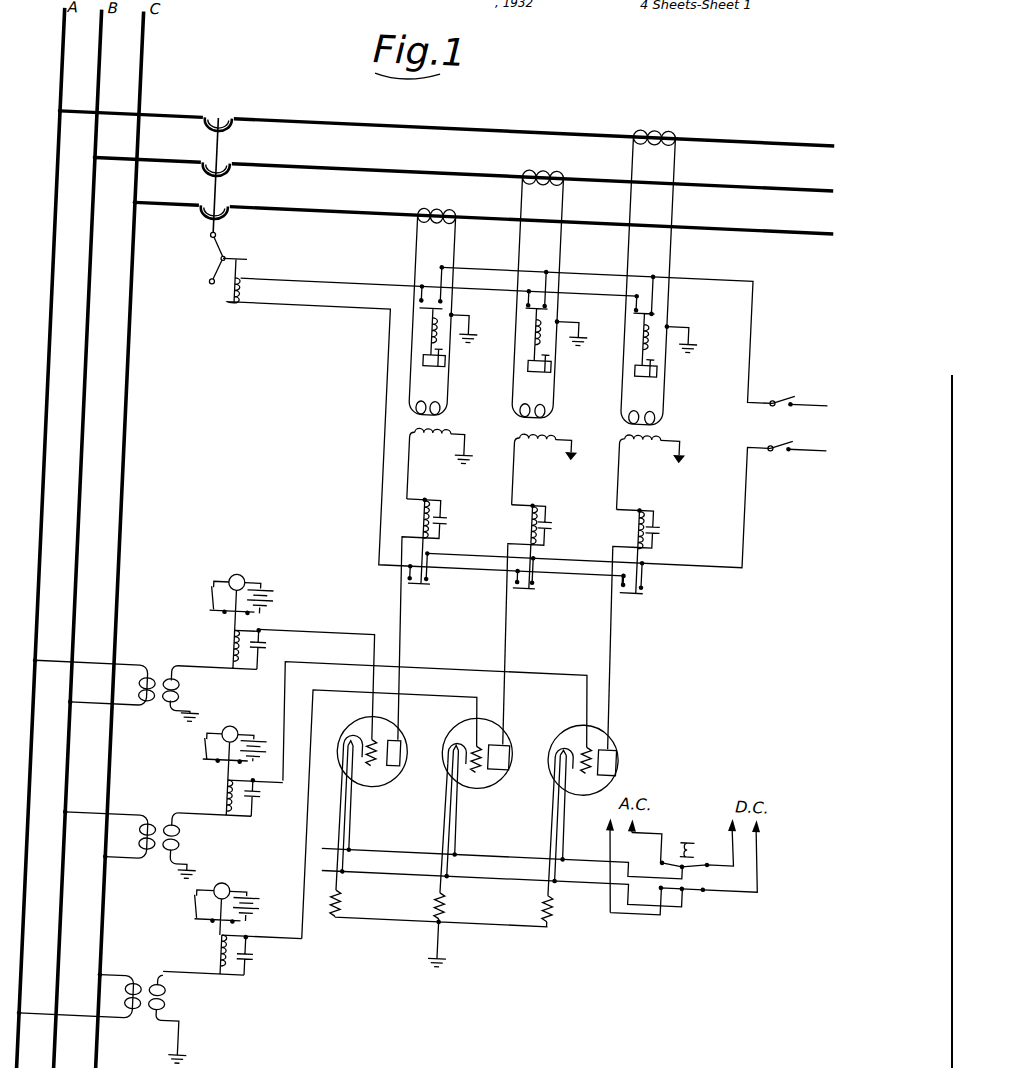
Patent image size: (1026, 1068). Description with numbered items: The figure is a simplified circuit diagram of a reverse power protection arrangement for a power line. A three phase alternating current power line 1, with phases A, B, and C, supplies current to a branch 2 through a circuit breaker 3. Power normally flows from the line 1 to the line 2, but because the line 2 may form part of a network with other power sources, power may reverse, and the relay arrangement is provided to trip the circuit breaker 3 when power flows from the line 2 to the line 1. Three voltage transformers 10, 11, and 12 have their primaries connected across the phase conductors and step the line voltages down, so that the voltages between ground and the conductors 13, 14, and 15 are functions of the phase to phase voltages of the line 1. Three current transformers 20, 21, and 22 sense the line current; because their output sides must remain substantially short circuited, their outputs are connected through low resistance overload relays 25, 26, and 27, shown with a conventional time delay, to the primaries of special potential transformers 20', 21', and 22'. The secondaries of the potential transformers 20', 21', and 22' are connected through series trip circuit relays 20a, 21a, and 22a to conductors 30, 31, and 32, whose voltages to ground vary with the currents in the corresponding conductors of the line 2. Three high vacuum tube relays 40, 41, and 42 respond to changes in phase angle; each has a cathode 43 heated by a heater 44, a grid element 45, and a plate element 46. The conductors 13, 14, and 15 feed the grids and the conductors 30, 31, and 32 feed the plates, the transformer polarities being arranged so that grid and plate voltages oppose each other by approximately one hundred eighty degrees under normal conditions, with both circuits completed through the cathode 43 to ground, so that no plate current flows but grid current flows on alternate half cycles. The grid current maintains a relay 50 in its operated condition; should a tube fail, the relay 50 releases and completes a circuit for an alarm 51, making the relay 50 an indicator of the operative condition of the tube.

The three phase alternating current power line 1 is at (146, 365).
The branch 2 is at (412, 105).
The circuit breaker 3 is at (228, 107).
The voltage transformer 10 is at (185, 660).
The voltage transformer 11 is at (193, 809).
The voltage transformer 12 is at (190, 969).
The conductor 13 is at (355, 616).
The conductor 14 is at (369, 649).
The conductor 15 is at (373, 677).
The current transformer 20 is at (434, 297).
The current transformer 21 is at (539, 278).
The current transformer 22 is at (648, 259).
The special potential transformer 20' is at (452, 452).
The special potential transformer 21' is at (554, 457).
The special potential transformer 22' is at (669, 460).
The series trip circuit relay 20a is at (466, 498).
The series trip circuit relay 21a is at (572, 502).
The series trip circuit relay 22a is at (679, 502).
The low resistance overload relay 25 is at (440, 310).
The low resistance overload relay 26 is at (548, 318).
The low resistance overload relay 27 is at (655, 322).
The conductor 30 is at (430, 628).
The conductor 31 is at (537, 626).
The conductor 32 is at (642, 634).
The high vacuum tube relay 40 is at (412, 769).
The high vacuum tube relay 41 is at (514, 767).
The high vacuum tube relay 42 is at (617, 769).
The cathode 43 is at (382, 722).
The heater 44 is at (331, 805).
The grid element 45 is at (420, 722).
The plate element 46 is at (436, 732).
The relay 50 is at (256, 638).
The alarm 51 is at (266, 565).